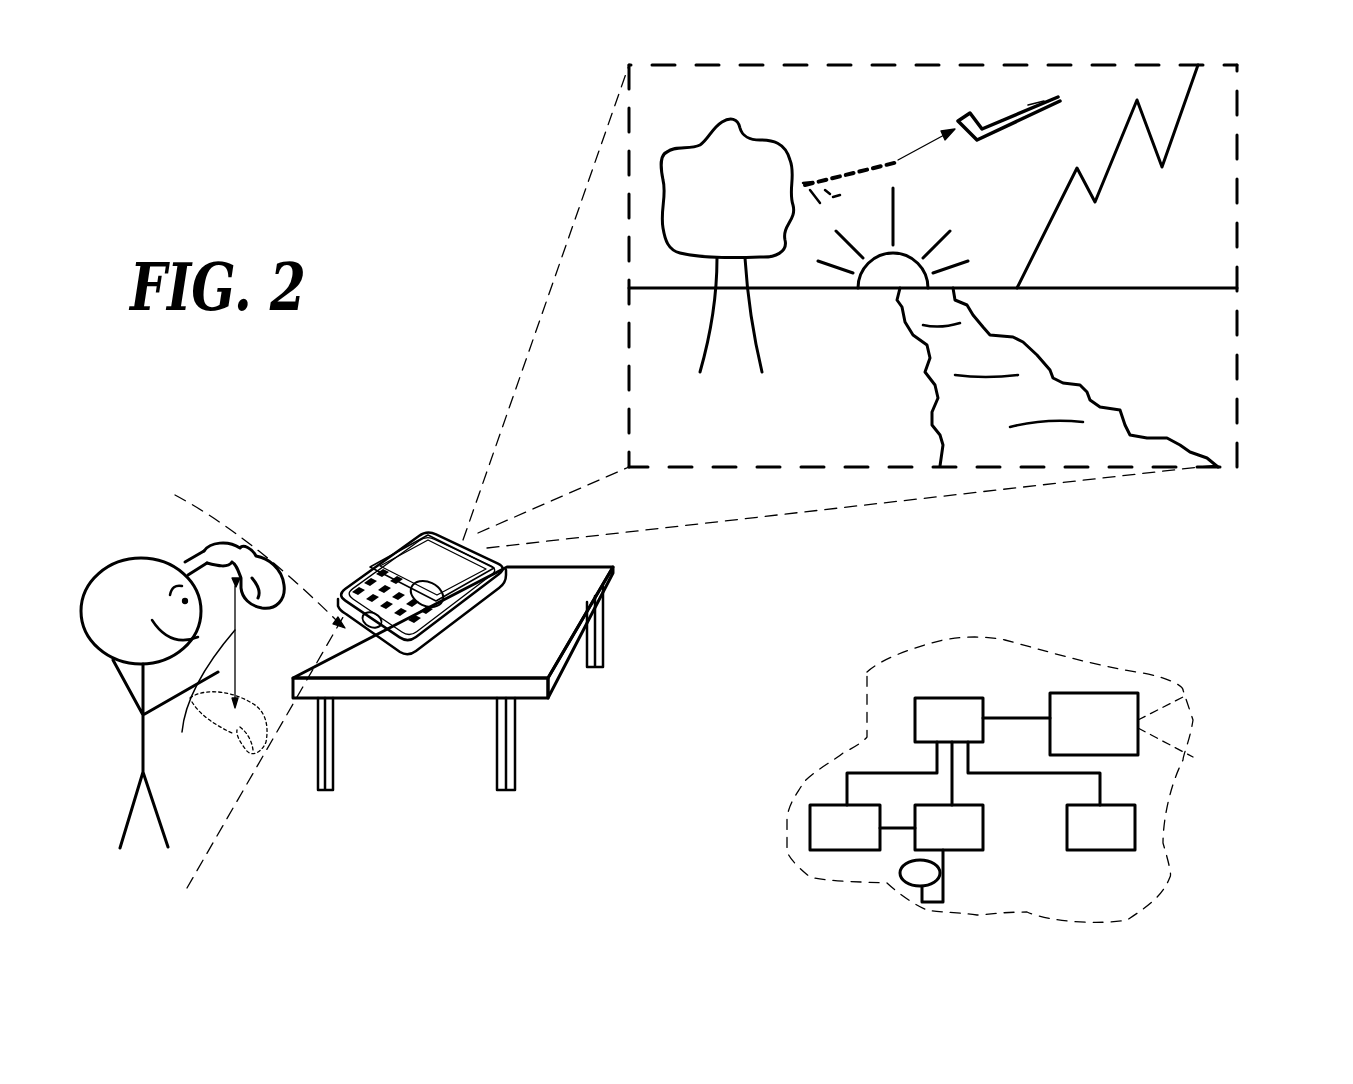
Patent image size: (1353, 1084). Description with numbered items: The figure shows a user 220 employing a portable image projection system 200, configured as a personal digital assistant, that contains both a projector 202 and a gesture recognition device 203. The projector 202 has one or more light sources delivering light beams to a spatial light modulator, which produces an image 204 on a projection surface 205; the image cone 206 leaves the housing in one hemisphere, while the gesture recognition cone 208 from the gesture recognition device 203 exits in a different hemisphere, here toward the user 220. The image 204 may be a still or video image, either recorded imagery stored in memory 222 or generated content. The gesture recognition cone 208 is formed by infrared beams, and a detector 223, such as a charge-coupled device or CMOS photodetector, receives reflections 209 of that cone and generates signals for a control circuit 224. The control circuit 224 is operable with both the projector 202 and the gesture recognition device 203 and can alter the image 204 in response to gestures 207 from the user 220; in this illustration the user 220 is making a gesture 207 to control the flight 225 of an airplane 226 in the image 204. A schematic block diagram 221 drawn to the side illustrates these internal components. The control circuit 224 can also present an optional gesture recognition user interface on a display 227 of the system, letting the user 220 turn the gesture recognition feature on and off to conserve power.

The portable image projection system 200 is at (593, 616).
The projector 202 is at (1090, 717).
The gesture recognition device 203 is at (835, 835).
The image 204 is at (1237, 158).
The projection surface 205 is at (1313, 300).
The image cone 206 is at (495, 432).
The gesture 207 is at (217, 695).
The gesture recognition cone 208 is at (247, 802).
The reflections 209 is at (310, 602).
The user 220 is at (138, 580).
The schematic block diagram 221 is at (448, 607).
The memory 222 is at (1097, 835).
The detector 223 is at (955, 835).
The control circuit 224 is at (942, 717).
The flight 225 is at (912, 148).
The airplane 226 is at (1008, 127).
The display 227 is at (462, 575).